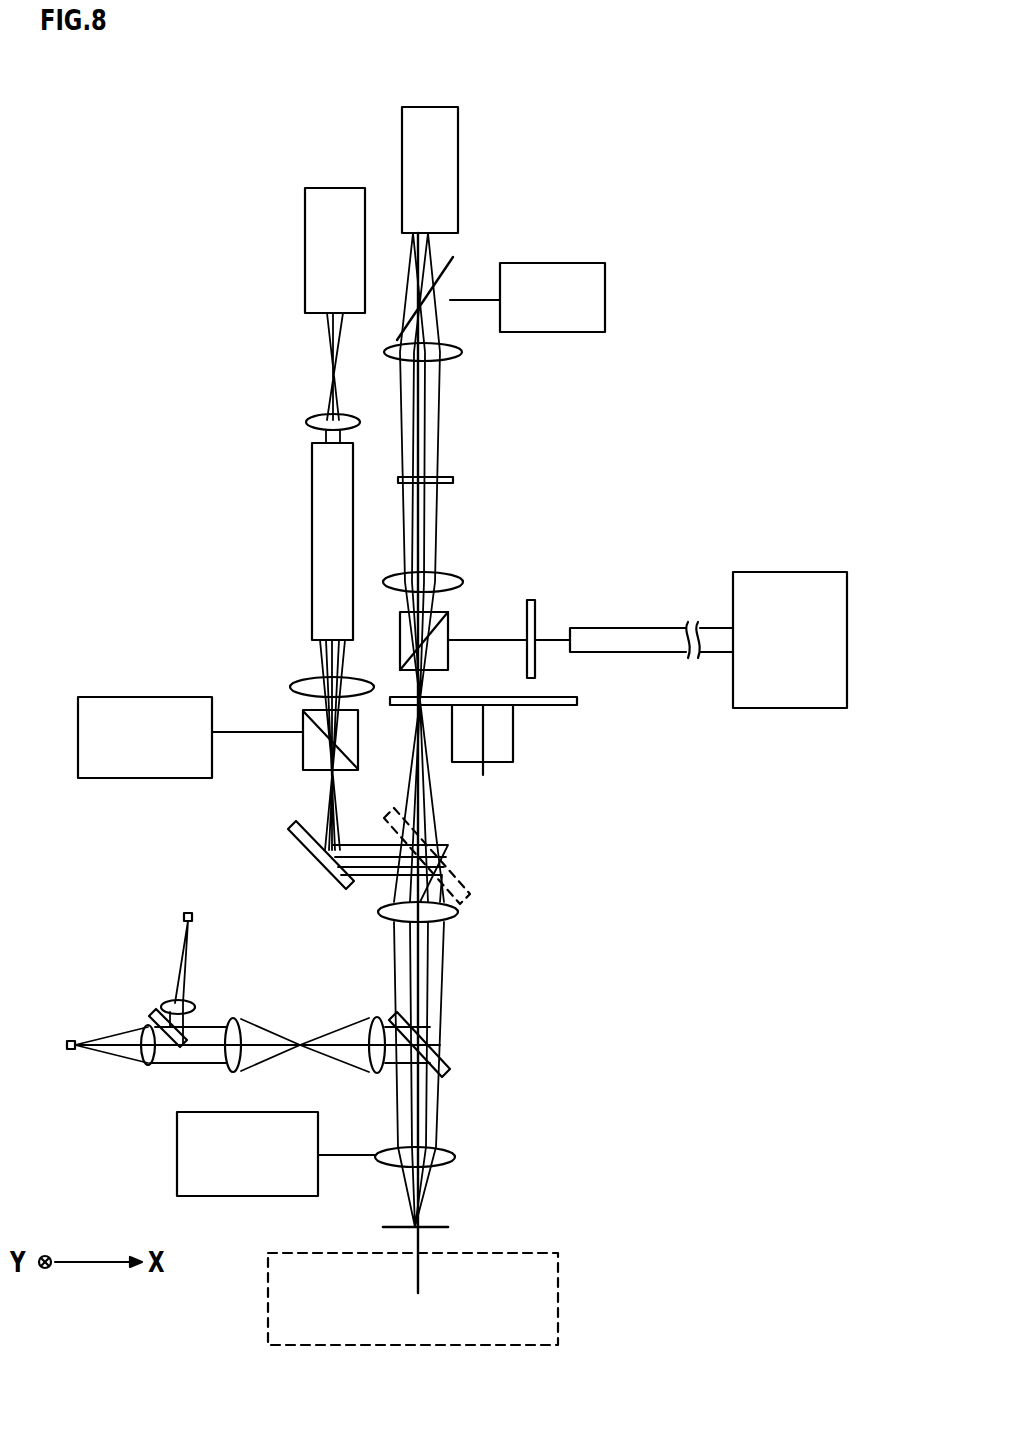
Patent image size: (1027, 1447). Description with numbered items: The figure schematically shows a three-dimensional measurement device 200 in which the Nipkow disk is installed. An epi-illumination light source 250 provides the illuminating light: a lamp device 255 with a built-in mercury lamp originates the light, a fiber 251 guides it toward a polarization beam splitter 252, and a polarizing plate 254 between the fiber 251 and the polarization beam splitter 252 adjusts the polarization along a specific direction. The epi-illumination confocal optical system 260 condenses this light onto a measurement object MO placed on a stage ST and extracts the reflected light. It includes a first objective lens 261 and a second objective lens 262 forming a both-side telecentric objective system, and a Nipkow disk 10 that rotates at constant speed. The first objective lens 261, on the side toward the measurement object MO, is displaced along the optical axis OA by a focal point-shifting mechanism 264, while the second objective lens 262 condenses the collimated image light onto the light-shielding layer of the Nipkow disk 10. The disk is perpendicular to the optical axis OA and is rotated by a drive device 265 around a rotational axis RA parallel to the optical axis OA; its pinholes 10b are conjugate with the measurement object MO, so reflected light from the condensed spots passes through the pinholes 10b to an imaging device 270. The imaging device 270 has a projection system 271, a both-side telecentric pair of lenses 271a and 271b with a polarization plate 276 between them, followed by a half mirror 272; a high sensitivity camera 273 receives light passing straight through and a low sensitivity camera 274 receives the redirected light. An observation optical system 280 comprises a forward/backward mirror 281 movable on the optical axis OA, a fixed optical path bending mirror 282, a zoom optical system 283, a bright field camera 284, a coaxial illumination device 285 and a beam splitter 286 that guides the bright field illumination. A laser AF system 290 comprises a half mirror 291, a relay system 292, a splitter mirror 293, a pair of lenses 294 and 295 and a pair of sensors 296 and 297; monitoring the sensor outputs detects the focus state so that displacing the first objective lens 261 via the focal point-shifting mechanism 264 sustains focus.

The 3-D measurement device 200 is at (790, 72).
The high sensitivity camera 273 is at (458, 130).
The bright field camera 284 is at (335, 196).
The low sensitivity camera 274 is at (548, 326).
The half mirror 272 is at (453, 257).
The lens 271b is at (392, 362).
The polarization plate 276 is at (410, 477).
The lens 271a is at (400, 575).
The projection system 271 is at (475, 335).
The imaging device 270 is at (605, 112).
The zoom optical system 283 is at (290, 403).
The observation optical system 280 is at (257, 444).
The coaxial illumination device 285 is at (143, 697).
The beam splitter 286 is at (303, 762).
The optical path bending mirror 282 is at (340, 890).
The forward/backward mirror 281 is at (470, 882).
The second objective lens 262 is at (458, 912).
The drive device 265 is at (508, 765).
The rotational axis RA is at (483, 775).
The Nipkow disk 10 is at (548, 697).
The pinholes 10b is at (400, 697).
The polarization beam splitter 252 is at (448, 625).
The polarizing plate 254 is at (537, 610).
The fiber 251 is at (665, 655).
The lamp device 255 is at (813, 657).
The epi-illumination light source 250 is at (683, 598).
The epi-illumination confocal optical system 260 is at (587, 700).
The first objective lens 261 is at (455, 1152).
The optical axis OA is at (425, 990).
The measurement object MO is at (435, 1224).
The stage ST is at (560, 1300).
The focal point-shifting mechanism 264 is at (267, 1172).
The laser AF system 290 is at (153, 920).
The sensor 296 is at (196, 915).
The sensor 297 is at (72, 1052).
The lens 295 is at (148, 1066).
The lens 294 is at (196, 1005).
The splitter mirror 293 is at (155, 1016).
The relay system 292 is at (355, 1068).
The half mirror 291 is at (395, 1018).